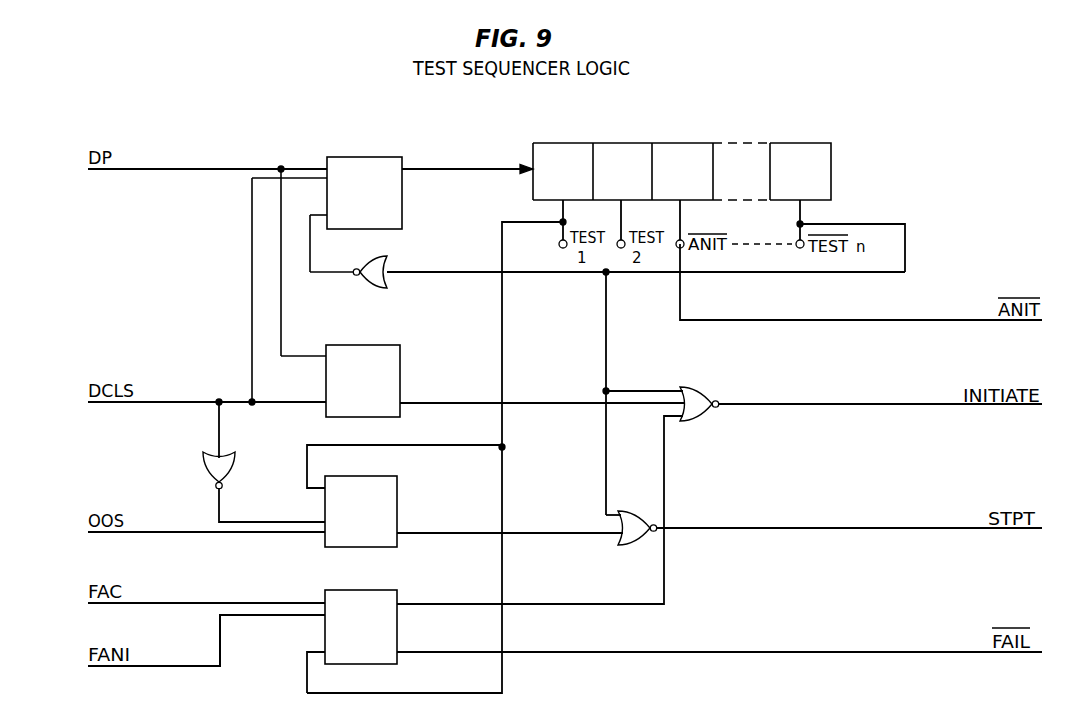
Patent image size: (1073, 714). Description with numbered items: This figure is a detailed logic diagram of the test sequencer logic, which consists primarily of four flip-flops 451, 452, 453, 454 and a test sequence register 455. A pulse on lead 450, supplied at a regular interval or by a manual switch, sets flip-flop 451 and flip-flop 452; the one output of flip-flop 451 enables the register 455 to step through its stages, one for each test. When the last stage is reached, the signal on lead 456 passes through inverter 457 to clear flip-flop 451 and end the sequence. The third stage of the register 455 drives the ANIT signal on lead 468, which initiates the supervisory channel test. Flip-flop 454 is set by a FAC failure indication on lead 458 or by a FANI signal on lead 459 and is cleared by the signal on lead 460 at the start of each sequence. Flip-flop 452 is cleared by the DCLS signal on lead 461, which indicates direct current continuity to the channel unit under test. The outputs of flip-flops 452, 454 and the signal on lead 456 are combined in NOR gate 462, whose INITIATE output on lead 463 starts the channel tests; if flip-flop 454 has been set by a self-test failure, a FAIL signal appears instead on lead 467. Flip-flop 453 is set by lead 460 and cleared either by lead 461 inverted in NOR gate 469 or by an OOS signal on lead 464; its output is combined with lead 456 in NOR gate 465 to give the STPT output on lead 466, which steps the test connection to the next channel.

The lead 450 is at (193, 166).
The flip-flop 451 is at (360, 157).
The flip-flop 452 is at (400, 378).
The flip-flop 453 is at (397, 512).
The flip-flop 454 is at (397, 592).
The test sequence register 455 is at (831, 166).
The lead 456 is at (905, 255).
The inverter 457 is at (369, 283).
The lead 458 is at (274, 602).
The lead 459 is at (166, 668).
The lead 460 is at (502, 222).
The lead 461 is at (190, 400).
The NOR gate 462 is at (699, 394).
The lead 463 is at (858, 408).
The lead 464 is at (212, 534).
The NOR gate 465 is at (622, 534).
The lead 466 is at (875, 530).
The lead 467 is at (815, 654).
The lead 468 is at (846, 322).
The NOR gate 469 is at (200, 470).